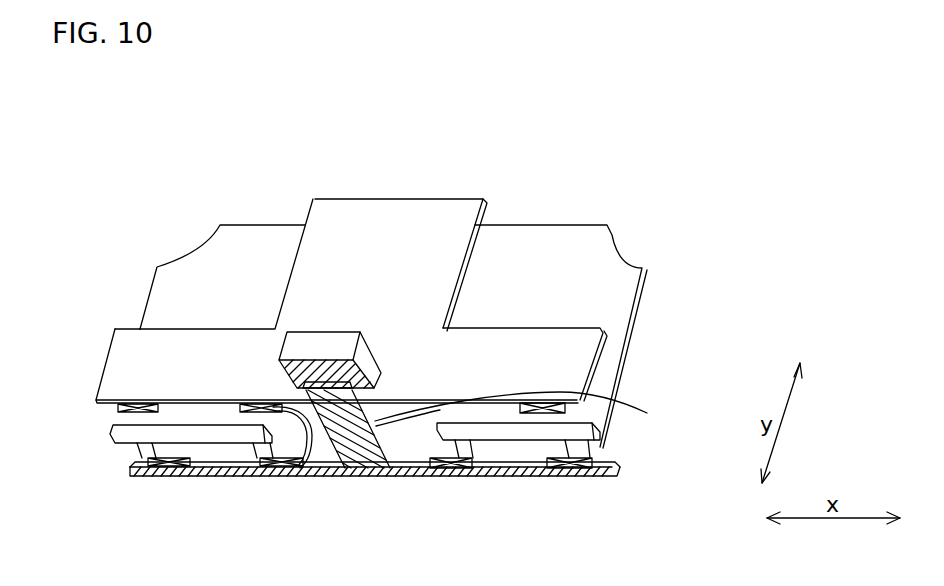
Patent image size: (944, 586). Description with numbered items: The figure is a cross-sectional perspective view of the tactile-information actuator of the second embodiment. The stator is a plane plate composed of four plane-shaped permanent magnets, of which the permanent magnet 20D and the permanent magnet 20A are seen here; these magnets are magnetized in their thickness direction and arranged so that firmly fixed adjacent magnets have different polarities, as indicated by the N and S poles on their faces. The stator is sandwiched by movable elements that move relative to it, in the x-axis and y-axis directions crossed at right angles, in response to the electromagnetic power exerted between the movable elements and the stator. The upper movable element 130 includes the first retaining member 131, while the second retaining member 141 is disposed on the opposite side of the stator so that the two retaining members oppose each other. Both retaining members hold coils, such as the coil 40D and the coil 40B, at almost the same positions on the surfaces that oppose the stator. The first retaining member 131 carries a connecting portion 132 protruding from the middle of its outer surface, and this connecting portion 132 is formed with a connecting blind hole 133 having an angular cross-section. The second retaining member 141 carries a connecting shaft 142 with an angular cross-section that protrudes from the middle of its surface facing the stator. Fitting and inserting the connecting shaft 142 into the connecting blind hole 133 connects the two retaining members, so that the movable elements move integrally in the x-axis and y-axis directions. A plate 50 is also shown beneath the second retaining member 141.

The movable element 130 is at (370, 197).
The first retaining member 131 is at (433, 210).
The connecting portion 132 is at (337, 337).
The connecting blind hole 133 is at (531, 412).
The permanent magnet 20D is at (162, 292).
The permanent magnet 20A is at (618, 300).
The coil 40D is at (110, 431).
The coil 40B is at (555, 455).
The second retaining member 141 is at (250, 473).
The connecting shaft 142 is at (352, 448).
The base plate 50 is at (497, 478).